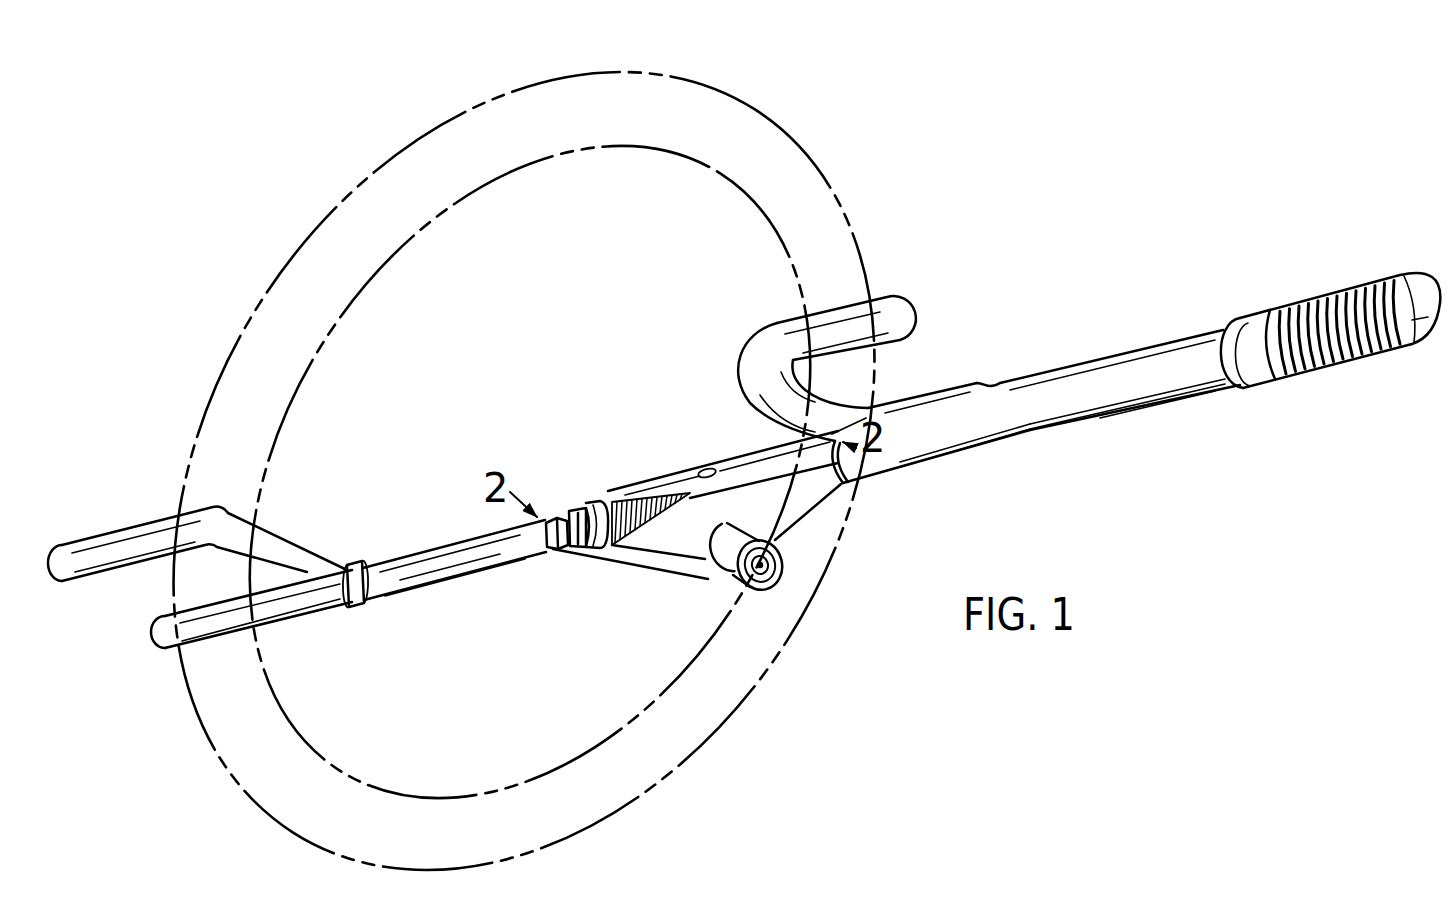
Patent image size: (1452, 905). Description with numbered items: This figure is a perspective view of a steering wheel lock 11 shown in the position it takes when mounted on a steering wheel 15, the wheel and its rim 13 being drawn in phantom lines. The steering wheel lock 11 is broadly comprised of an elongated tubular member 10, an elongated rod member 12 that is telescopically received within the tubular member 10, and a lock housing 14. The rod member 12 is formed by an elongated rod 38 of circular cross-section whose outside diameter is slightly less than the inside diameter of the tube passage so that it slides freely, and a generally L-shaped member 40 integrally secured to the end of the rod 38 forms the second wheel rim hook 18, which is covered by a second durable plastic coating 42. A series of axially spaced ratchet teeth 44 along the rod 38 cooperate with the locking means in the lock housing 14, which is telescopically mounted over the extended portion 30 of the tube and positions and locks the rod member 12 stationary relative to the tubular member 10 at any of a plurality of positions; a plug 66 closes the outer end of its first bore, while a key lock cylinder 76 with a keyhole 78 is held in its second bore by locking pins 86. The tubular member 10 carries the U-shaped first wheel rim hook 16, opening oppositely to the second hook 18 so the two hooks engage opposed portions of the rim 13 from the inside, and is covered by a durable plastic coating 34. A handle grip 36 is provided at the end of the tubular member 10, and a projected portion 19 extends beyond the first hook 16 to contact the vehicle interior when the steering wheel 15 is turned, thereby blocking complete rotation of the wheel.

The elongated tubular member 10 is at (1106, 358).
The steering wheel lock 11 is at (1014, 288).
The elongated rod member 12 is at (400, 555).
The rim 13 is at (780, 656).
The lock housing 14 is at (654, 477).
The steering wheel 15 is at (692, 768).
The first wheel rim hook 16 is at (893, 318).
The second wheel rim hook 18 is at (91, 536).
The projected portion 19 is at (1210, 386).
The extended portion of tube 30 is at (583, 504).
The durable plastic coating 34 is at (972, 455).
The handle grip 36 is at (1258, 312).
The elongated rod 38 is at (455, 565).
The generally L-shaped member 40 is at (143, 526).
The second durable plastic coating 42 is at (357, 600).
The ratchet teeth 44 is at (561, 553).
The plug 66 is at (705, 468).
The key lock cylinder 76 is at (770, 583).
The keyhole 78 is at (752, 560).
The locking pins 86 is at (703, 572).